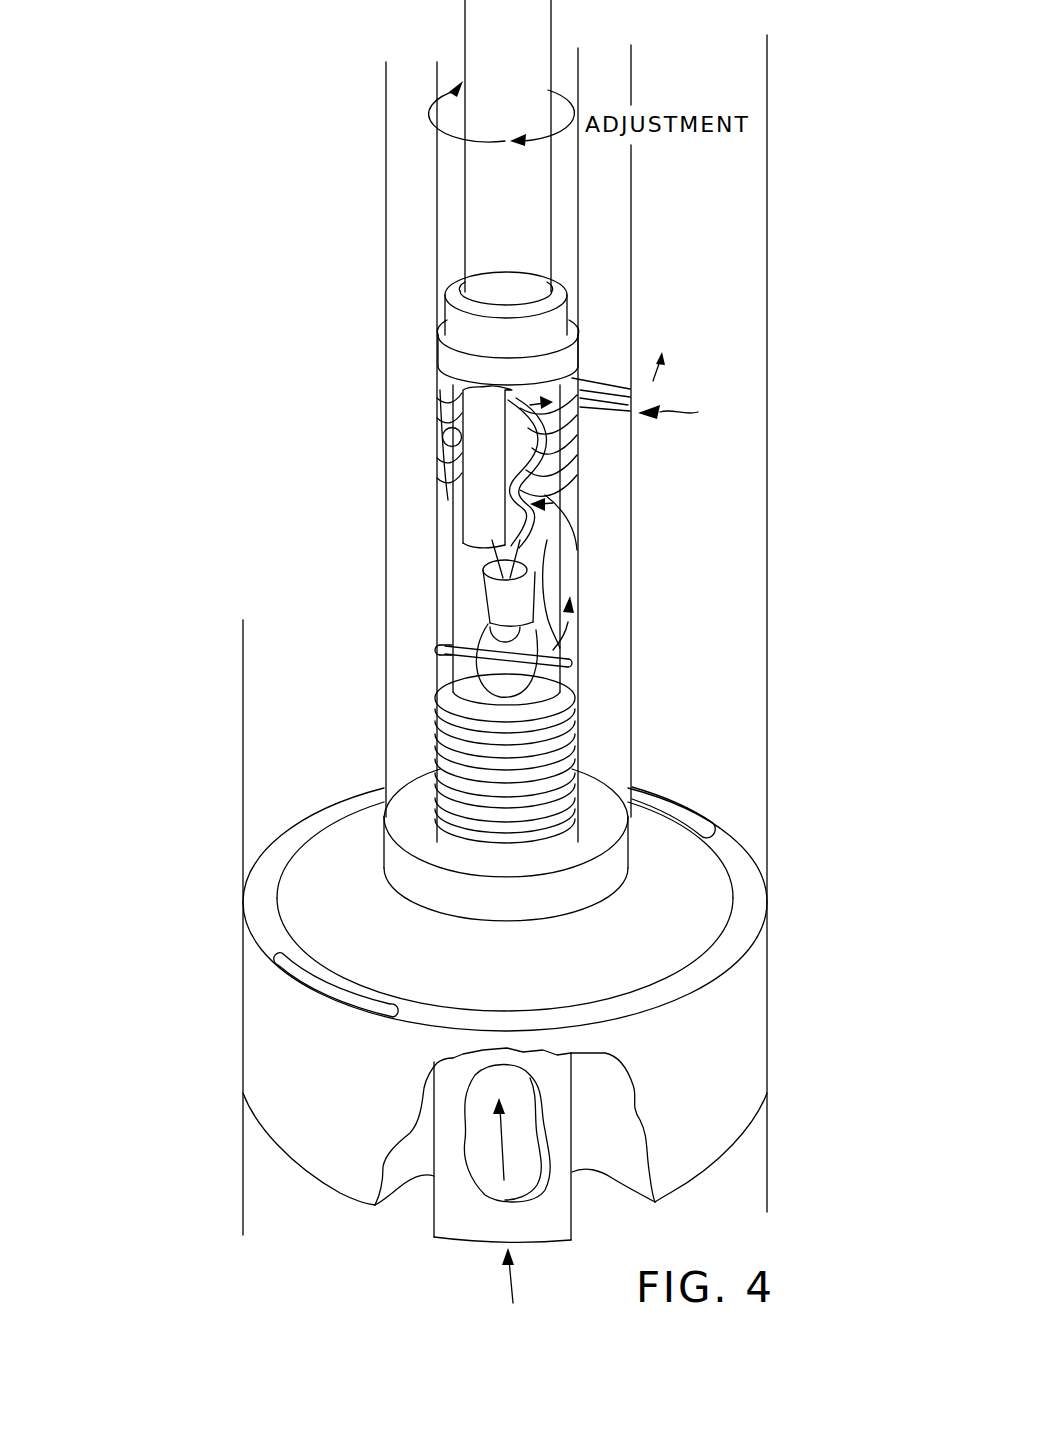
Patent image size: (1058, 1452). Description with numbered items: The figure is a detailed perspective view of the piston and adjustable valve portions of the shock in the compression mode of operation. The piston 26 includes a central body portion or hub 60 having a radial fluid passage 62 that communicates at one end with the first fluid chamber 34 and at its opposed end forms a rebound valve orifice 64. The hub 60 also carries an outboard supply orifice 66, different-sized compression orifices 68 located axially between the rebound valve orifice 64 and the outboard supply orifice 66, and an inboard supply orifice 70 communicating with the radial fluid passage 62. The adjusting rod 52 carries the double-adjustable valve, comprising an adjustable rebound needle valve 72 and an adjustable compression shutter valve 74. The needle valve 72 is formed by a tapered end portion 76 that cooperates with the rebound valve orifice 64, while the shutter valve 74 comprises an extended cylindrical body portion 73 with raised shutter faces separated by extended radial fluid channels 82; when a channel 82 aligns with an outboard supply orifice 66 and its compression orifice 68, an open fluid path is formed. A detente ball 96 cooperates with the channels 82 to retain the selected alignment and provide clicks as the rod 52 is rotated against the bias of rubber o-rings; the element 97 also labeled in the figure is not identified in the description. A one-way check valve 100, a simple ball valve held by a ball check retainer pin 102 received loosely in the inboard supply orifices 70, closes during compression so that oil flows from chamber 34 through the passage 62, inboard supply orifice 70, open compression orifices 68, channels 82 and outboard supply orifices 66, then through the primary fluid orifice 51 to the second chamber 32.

The piston 26 is at (270, 1050).
The second fluid chamber 32 is at (307, 752).
The first fluid chamber 34 is at (282, 1205).
The primary fluid orifice 51 is at (636, 399).
The adjusting rod 52 is at (482, 192).
The central body portion or hub 60 is at (580, 746).
The radial fluid passage 62 is at (482, 1155).
The rebound valve orifice 64 is at (485, 568).
The outboard supply orifice 66 is at (568, 378).
The compression orifices 68 is at (530, 490).
The inboard supply orifice 70 is at (597, 640).
The adjustable rebound needle valve 72 is at (610, 526).
The extended cylindrical body portion 73 is at (472, 464).
The adjustable compression shutter valve 74 is at (685, 388).
The tapered end portion 76 is at (540, 557).
The radial fluid channels or grooves 82 is at (510, 468).
The detente ball 96 is at (435, 427).
The ball 97 is at (444, 433).
The one-way check valve 100 is at (450, 630).
The ball check retainer pin 102 is at (437, 655).